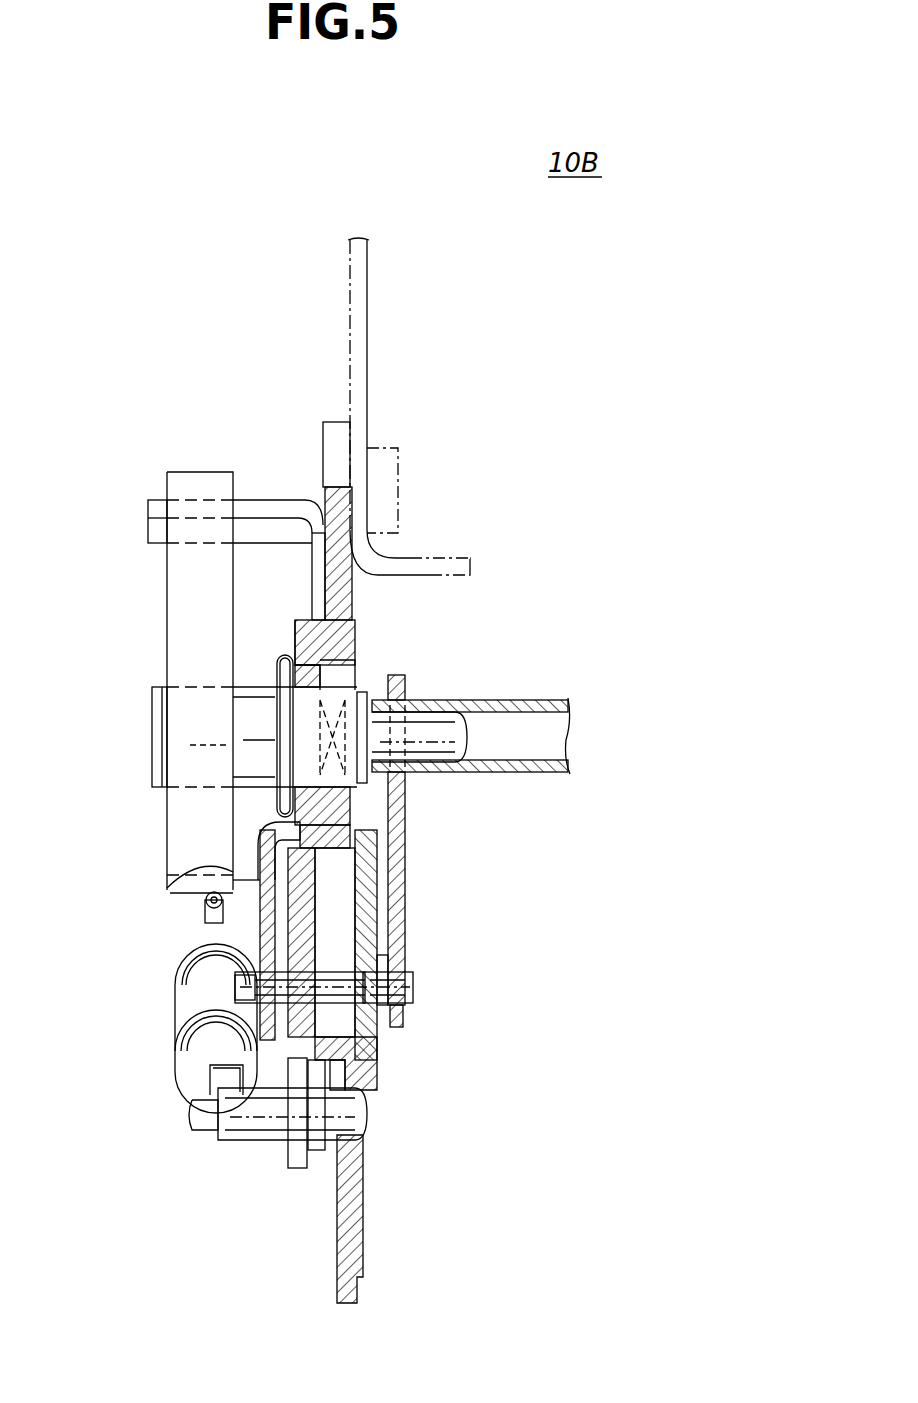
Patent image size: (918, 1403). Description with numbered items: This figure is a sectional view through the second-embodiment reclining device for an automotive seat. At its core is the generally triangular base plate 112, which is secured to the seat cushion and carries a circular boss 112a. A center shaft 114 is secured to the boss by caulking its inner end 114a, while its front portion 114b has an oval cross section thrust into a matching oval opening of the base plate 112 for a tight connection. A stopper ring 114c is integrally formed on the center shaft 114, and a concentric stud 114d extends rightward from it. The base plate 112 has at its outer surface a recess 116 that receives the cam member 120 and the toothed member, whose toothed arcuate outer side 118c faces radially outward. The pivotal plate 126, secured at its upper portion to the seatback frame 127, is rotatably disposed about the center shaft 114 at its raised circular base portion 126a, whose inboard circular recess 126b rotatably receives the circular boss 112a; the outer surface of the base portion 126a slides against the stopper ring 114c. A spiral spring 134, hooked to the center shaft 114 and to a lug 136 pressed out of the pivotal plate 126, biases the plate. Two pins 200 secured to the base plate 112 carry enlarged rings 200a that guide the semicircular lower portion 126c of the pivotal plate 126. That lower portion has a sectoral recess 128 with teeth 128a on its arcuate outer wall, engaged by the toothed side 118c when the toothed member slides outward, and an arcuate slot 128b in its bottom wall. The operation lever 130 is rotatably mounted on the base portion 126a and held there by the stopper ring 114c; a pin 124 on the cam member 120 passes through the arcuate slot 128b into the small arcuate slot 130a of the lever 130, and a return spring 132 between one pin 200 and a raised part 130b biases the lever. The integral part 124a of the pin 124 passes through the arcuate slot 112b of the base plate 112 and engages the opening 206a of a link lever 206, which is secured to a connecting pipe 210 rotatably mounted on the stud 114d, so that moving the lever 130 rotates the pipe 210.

The base plate 112 is at (352, 1222).
The circular boss 112a is at (362, 856).
The arcuate slot 112b is at (396, 950).
The center shaft 114 is at (152, 730).
The inner end 114a is at (365, 690).
The front portion 114b is at (350, 665).
The stopper ring 114c is at (285, 666).
The stud 114d is at (440, 752).
The recess 116 is at (347, 1045).
The toothed arcuate outer side 118c is at (372, 1075).
The cam member 120 is at (352, 932).
The pin 124 is at (237, 985).
The integral part 124a is at (412, 990).
The pivotal plate 126 is at (325, 576).
The circular base portion 126a is at (298, 625).
The circular recess 126b is at (348, 660).
The semicircular lower portion 126c is at (375, 1138).
The seatback frame 127 is at (368, 292).
The sectoral recess 128 is at (337, 927).
The teeth 128a is at (320, 1152).
The arcuate slot 128b is at (258, 1005).
The operation lever 130 is at (168, 882).
The small arcuate slot 130a is at (247, 992).
The raised part 130b is at (202, 906).
The return spring 132 is at (178, 1045).
The spiral spring 134 is at (200, 472).
The lug 136 is at (148, 502).
The pin 200 is at (250, 1150).
The enlarged ring 200a is at (300, 1168).
The link lever 206 is at (406, 885).
The opening 206a is at (404, 1018).
The connecting pipe 210 is at (535, 770).